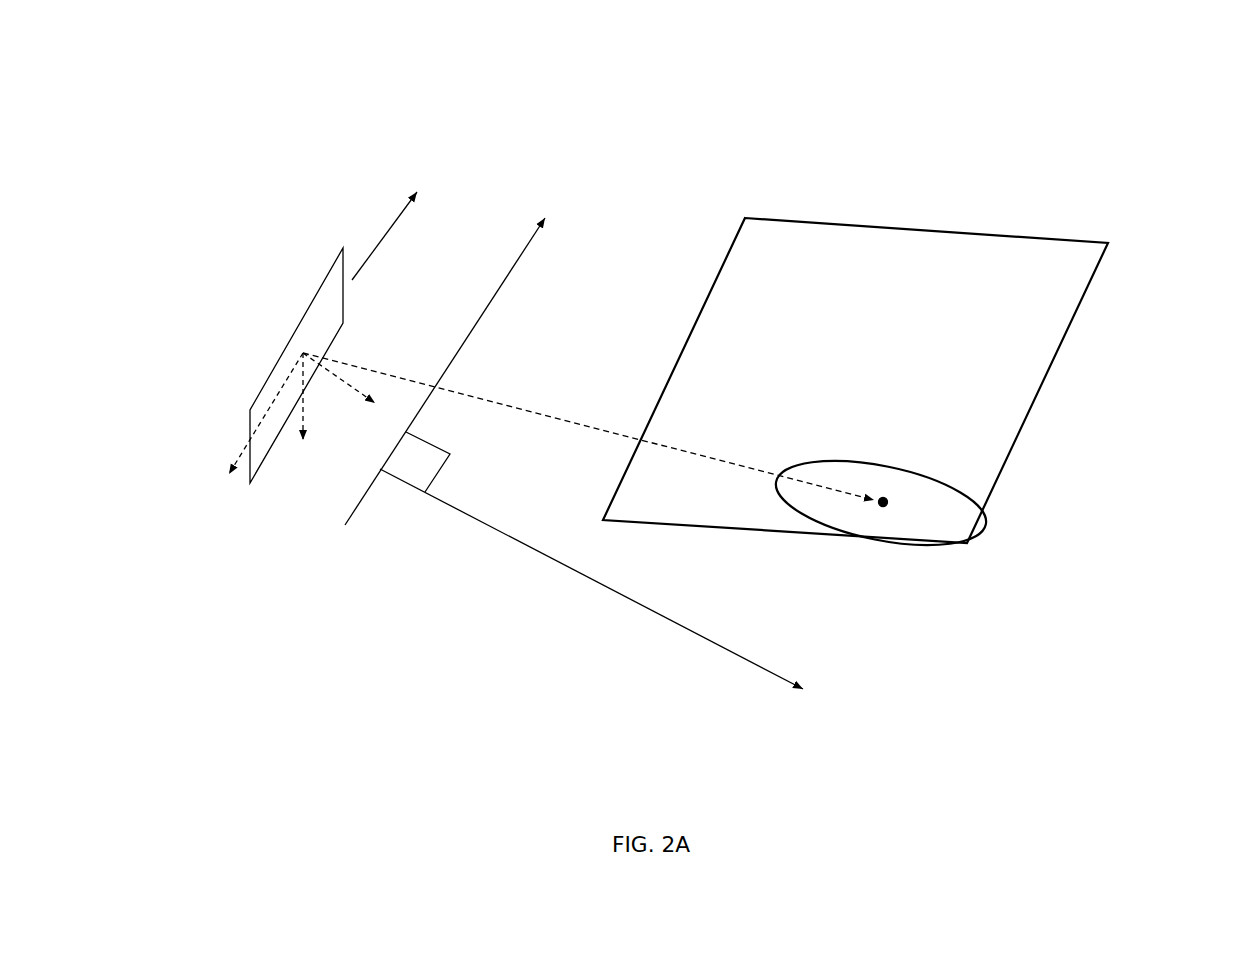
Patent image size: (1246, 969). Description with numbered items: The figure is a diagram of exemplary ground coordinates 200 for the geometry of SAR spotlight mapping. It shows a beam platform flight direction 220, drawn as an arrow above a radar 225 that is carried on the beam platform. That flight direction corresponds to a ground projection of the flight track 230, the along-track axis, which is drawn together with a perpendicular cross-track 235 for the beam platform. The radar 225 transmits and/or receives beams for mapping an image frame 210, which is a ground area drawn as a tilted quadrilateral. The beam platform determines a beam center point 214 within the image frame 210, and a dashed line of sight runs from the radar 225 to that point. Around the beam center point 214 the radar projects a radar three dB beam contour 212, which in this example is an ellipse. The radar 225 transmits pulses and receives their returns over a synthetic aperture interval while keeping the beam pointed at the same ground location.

The ground coordinates 200 is at (792, 262).
The image frame 210 is at (1023, 232).
The radar 3 dB beam contour 212 is at (902, 552).
The beam center point 214 is at (893, 500).
The platform flight direction 220 is at (415, 184).
The radar 225 is at (300, 371).
The ground projection of flight track 230 is at (526, 307).
The cross-track 235 is at (647, 610).